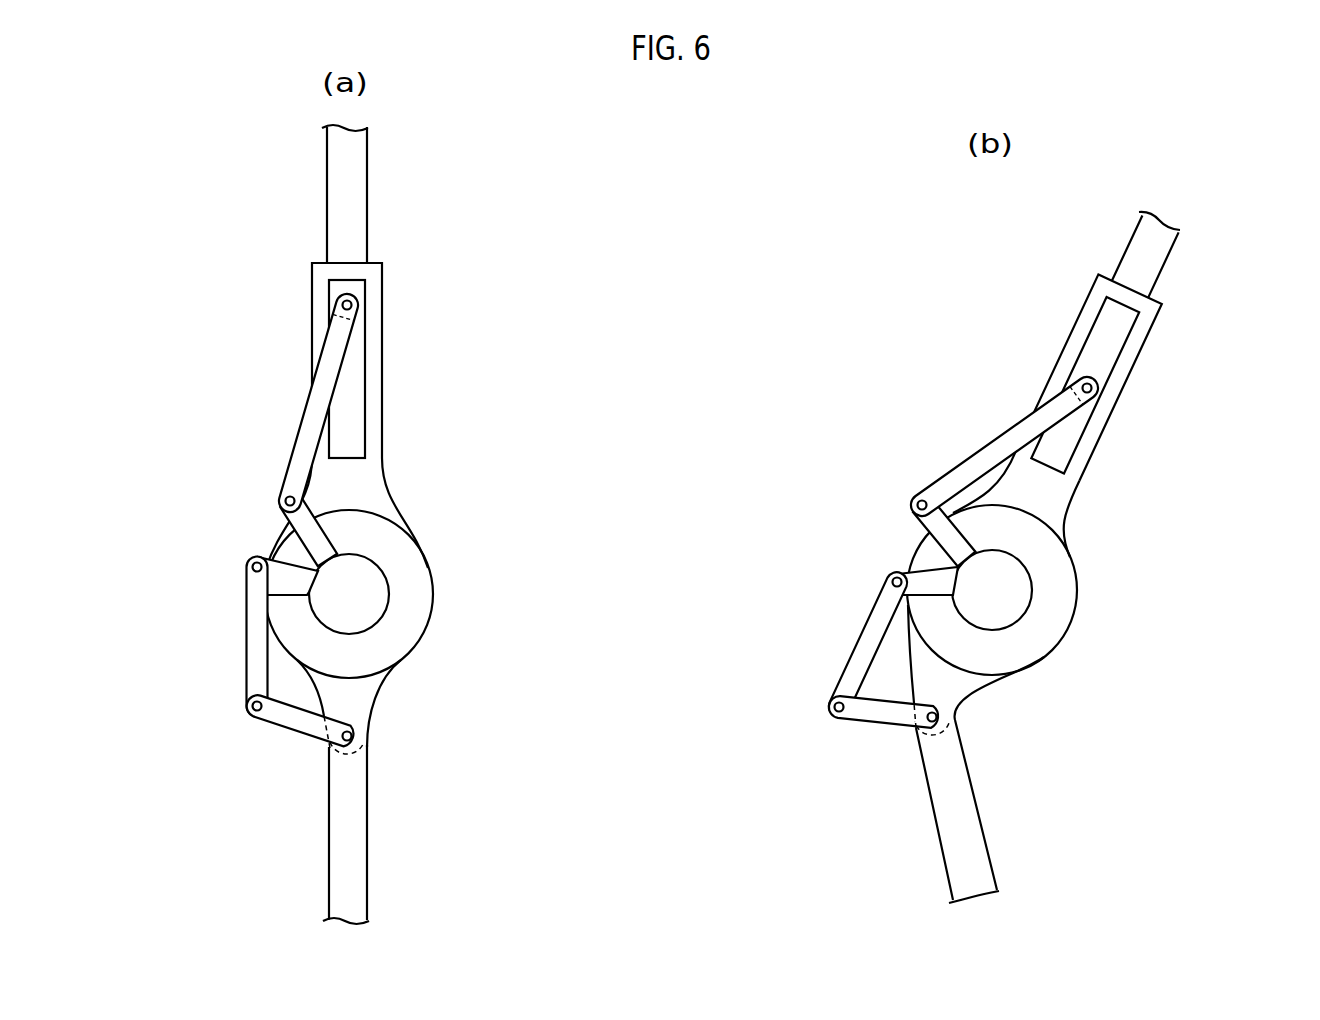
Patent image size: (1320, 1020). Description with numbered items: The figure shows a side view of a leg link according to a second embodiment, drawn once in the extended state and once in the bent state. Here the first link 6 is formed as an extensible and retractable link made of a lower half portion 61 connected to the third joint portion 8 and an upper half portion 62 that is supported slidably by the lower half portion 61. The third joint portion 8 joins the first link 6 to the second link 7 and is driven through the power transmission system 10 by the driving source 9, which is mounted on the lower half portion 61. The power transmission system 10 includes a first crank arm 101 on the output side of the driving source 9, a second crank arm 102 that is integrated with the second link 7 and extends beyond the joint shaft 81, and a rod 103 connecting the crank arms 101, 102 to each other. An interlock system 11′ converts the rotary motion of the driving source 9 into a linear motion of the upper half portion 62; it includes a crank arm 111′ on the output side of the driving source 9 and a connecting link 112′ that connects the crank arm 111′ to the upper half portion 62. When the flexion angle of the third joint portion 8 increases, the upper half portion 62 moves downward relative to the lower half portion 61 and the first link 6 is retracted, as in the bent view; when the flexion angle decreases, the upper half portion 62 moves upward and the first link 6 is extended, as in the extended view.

The first link 6 is at (772, 346).
The lower half portion 61 is at (751, 415).
The upper half portion 62 is at (370, 237).
The second link 7 is at (357, 832).
The third joint portion 8 is at (661, 699).
The joint shaft 81 is at (330, 748).
The driving source 9 is at (377, 510).
The power transmission system 10 is at (559, 669).
The first crank arm 101 is at (290, 579).
The second crank arm 102 is at (278, 727).
The rod 103 is at (247, 635).
The interlock system 11′ is at (646, 430).
The crank arm 111′ is at (302, 538).
The connecting link 112′ is at (314, 412).